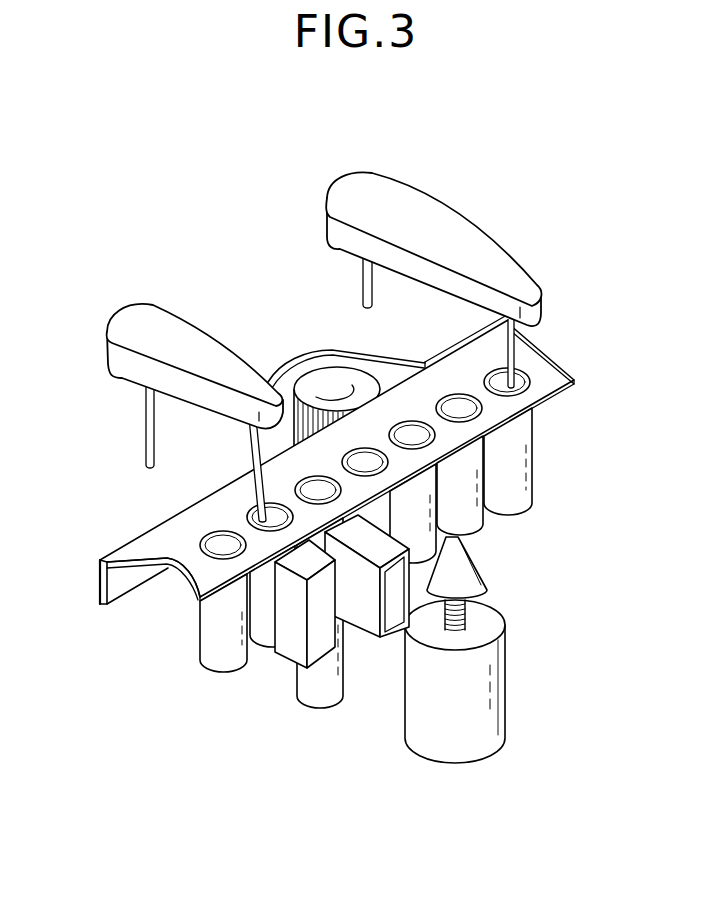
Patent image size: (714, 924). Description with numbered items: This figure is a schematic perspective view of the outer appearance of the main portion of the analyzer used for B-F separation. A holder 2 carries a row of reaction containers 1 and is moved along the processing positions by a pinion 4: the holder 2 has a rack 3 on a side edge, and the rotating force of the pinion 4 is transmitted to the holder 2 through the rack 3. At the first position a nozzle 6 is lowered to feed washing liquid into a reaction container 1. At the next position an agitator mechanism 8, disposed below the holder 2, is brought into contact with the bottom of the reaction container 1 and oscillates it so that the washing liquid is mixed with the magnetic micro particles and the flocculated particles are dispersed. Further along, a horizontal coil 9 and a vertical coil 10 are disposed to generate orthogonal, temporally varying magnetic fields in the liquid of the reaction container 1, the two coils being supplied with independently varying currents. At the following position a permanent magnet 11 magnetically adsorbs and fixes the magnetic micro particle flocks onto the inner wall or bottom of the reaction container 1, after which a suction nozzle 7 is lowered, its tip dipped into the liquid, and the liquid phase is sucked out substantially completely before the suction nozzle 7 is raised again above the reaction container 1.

The reaction container 1 is at (505, 480).
The holder 2 is at (546, 379).
The rack 3 is at (98, 585).
The pinion 4 is at (323, 380).
The nozzle 6 is at (515, 357).
The suction nozzle 7 is at (256, 463).
The agitator mechanism 8 is at (462, 585).
The horizontal coil 9 is at (394, 640).
The vertical coil 10 is at (322, 712).
The permanent magnet 11 is at (290, 642).